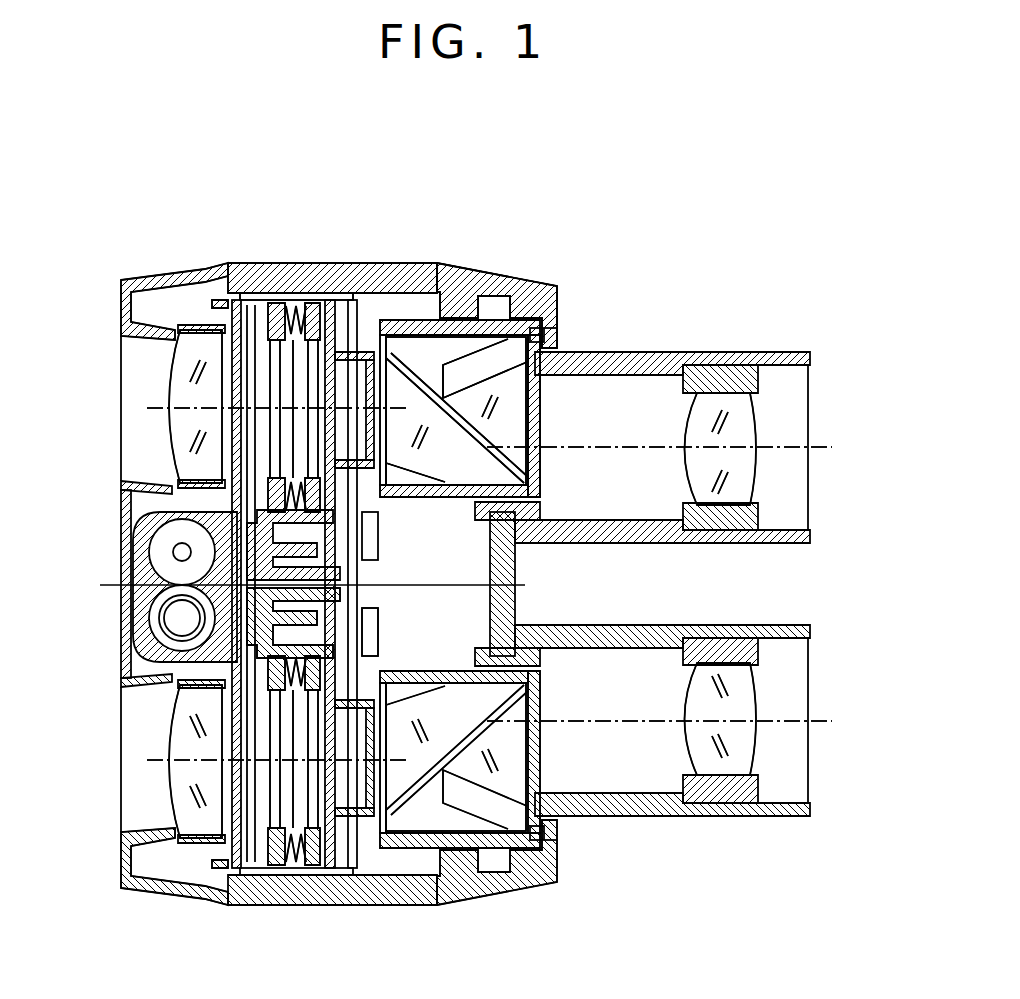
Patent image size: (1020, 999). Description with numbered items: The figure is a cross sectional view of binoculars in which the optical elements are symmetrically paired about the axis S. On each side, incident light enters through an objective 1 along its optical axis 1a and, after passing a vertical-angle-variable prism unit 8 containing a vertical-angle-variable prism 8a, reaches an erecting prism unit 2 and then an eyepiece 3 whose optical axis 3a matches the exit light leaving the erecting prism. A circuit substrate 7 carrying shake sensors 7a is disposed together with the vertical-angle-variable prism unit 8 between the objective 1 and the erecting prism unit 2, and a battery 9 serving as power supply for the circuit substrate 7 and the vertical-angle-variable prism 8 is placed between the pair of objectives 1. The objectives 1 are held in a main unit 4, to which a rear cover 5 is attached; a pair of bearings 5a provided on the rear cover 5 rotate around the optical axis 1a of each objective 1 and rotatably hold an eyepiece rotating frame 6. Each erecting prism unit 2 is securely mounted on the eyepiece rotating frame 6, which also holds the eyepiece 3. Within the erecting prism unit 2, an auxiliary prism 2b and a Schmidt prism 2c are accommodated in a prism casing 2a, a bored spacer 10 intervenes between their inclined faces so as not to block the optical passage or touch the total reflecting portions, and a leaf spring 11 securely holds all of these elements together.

The objective 1 is at (180, 365).
The optical axis of objective 1a is at (158, 407).
The erecting prism unit 2 is at (467, 362).
The prism casing 2a is at (442, 390).
The auxiliary prism 2b is at (402, 390).
The Schmidt prism 2c is at (538, 397).
The eyepiece 3 is at (747, 418).
The optical axis of eyepiece 3a is at (797, 448).
The main unit 4 is at (292, 290).
The rear cover 5 is at (466, 292).
The bearing 5a is at (508, 284).
The eyepiece rotating frame 6 is at (550, 282).
The circuit substrate 7 is at (380, 860).
The shake sensor 7a is at (385, 860).
The vertical-angle-variable prism unit 8 is at (255, 300).
The vertical-angle-variable prism 8a is at (198, 300).
The battery 9 is at (157, 552).
The spacer 10 is at (437, 292).
The leaf spring 11 is at (326, 290).
The axis S is at (125, 588).